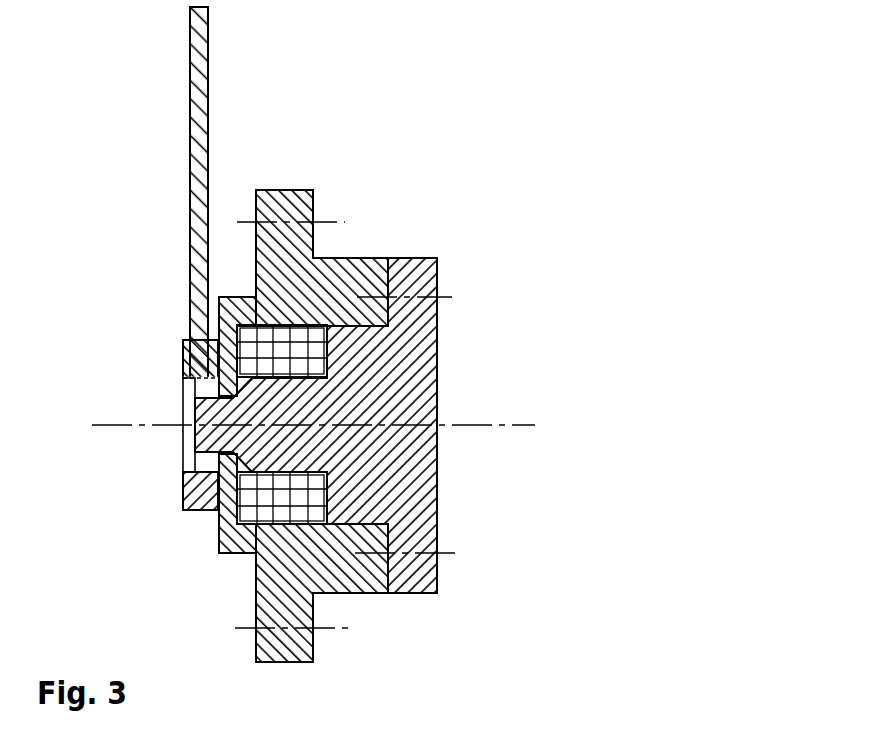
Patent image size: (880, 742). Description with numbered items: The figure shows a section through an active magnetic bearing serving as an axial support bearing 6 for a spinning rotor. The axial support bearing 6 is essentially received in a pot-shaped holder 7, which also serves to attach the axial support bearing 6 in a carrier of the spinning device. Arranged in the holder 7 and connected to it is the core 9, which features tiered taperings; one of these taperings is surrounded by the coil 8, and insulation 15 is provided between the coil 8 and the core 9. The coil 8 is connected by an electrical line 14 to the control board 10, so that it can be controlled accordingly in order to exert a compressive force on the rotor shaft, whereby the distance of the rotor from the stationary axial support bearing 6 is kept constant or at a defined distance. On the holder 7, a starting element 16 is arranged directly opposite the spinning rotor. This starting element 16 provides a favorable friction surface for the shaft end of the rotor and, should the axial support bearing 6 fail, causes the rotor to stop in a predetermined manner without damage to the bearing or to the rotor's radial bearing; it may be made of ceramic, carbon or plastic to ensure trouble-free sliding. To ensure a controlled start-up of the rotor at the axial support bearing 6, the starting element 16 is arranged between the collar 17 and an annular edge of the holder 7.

The axial support bearing 6 is at (302, 366).
The holder 7 is at (335, 268).
The coil 8 is at (265, 498).
The core 9 is at (427, 473).
The control board 10 is at (190, 128).
The electrical line 14 is at (247, 296).
The insulation 15 is at (327, 348).
The starting element 16 is at (187, 492).
The collar 17 is at (218, 373).